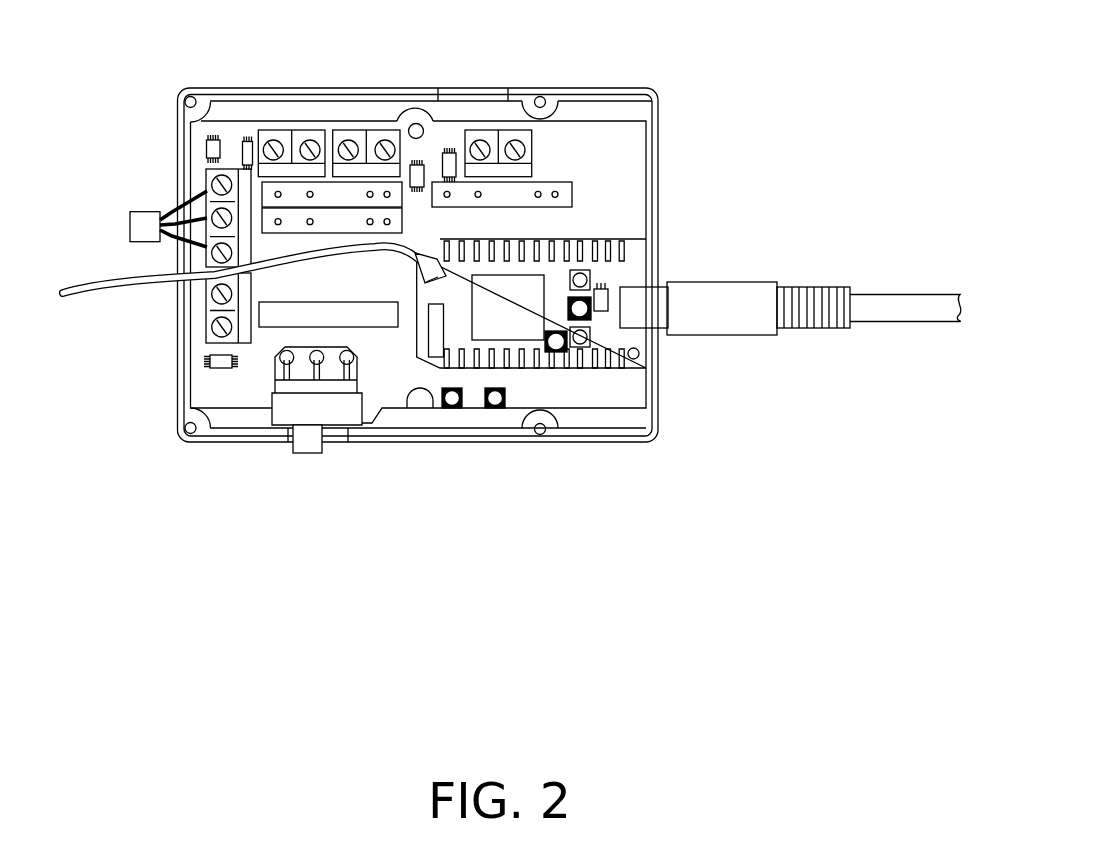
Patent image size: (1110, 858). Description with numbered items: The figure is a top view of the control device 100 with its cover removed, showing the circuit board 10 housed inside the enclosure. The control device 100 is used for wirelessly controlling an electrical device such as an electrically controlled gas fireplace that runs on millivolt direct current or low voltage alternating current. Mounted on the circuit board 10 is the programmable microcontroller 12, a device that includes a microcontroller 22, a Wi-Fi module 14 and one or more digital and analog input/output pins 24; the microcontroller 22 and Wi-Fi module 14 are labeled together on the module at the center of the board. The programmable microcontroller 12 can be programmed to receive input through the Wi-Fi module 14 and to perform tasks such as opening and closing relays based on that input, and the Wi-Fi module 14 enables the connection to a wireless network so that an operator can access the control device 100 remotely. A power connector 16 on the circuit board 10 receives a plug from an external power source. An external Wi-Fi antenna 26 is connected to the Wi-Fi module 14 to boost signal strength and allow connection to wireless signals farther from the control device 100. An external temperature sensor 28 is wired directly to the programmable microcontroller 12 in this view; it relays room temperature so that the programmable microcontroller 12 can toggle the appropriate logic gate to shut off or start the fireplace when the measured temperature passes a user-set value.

The control device 100 is at (512, 296).
The circuit board 10 is at (474, 257).
The programmable microcontroller 12 is at (640, 354).
The Wi-Fi module 14 is at (517, 317).
The microcontroller 22 is at (509, 384).
The power connector 16 is at (712, 292).
The digital and analog input/output pins 24 is at (593, 247).
The external Wi-Fi antenna 26 is at (131, 286).
The external temperature sensor 28 is at (143, 223).